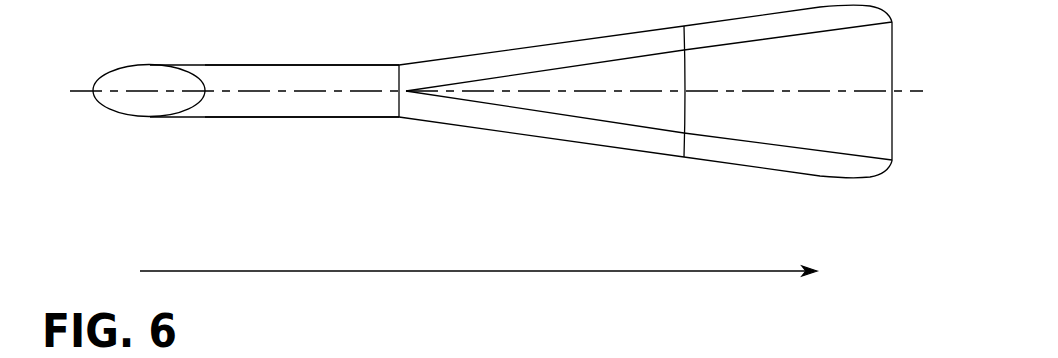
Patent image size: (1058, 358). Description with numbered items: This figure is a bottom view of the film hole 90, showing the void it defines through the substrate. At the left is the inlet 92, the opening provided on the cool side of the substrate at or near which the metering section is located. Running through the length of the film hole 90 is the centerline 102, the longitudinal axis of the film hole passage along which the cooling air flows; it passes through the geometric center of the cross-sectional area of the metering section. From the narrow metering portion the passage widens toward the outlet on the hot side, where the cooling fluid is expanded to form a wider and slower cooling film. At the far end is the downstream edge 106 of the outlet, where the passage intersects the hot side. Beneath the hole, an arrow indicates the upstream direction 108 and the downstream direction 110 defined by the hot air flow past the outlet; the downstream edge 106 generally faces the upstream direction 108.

The film hole 90 is at (413, 150).
The inlet 92 is at (117, 100).
The centerline 102 is at (170, 91).
The downstream edge 106 is at (892, 115).
The upstream direction 108 is at (286, 273).
The downstream direction 110 is at (672, 273).